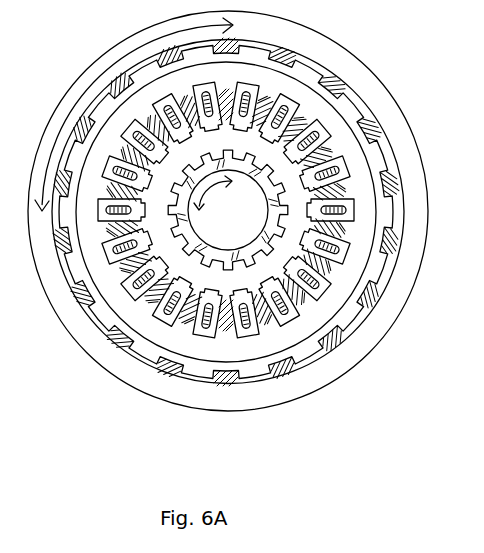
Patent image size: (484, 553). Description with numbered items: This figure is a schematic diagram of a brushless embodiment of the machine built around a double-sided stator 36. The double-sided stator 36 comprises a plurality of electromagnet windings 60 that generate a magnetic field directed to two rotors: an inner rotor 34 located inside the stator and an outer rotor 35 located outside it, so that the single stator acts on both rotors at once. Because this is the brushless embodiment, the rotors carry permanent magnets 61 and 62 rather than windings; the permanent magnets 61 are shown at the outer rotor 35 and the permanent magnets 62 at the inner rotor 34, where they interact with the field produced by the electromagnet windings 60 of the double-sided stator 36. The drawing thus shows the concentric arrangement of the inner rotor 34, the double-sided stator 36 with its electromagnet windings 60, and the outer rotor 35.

The inner rotor 34 is at (250, 170).
The outer rotor 35 is at (383, 263).
The double-sided stator 36 is at (302, 290).
The electromagnet windings 60 is at (207, 307).
The permanent magnets 61 is at (357, 105).
The permanent magnets 62 is at (200, 253).